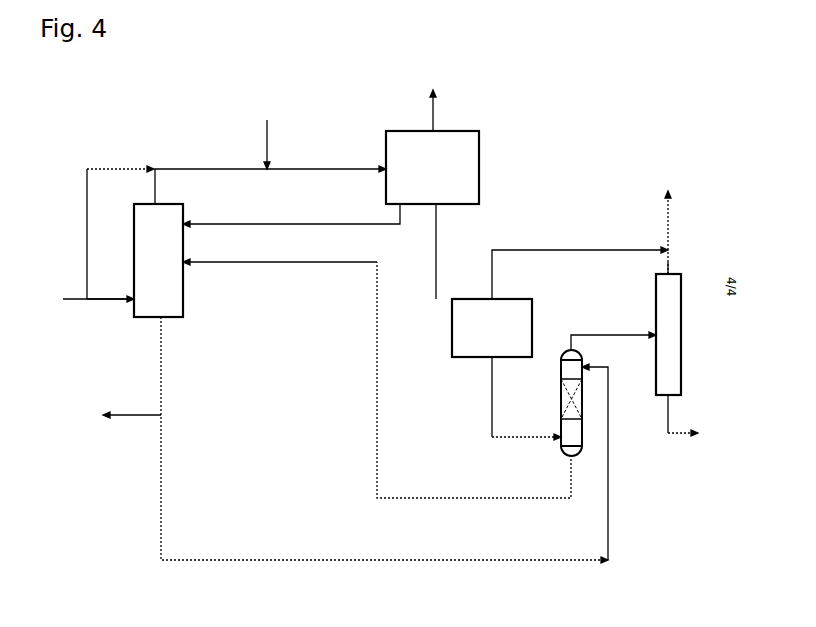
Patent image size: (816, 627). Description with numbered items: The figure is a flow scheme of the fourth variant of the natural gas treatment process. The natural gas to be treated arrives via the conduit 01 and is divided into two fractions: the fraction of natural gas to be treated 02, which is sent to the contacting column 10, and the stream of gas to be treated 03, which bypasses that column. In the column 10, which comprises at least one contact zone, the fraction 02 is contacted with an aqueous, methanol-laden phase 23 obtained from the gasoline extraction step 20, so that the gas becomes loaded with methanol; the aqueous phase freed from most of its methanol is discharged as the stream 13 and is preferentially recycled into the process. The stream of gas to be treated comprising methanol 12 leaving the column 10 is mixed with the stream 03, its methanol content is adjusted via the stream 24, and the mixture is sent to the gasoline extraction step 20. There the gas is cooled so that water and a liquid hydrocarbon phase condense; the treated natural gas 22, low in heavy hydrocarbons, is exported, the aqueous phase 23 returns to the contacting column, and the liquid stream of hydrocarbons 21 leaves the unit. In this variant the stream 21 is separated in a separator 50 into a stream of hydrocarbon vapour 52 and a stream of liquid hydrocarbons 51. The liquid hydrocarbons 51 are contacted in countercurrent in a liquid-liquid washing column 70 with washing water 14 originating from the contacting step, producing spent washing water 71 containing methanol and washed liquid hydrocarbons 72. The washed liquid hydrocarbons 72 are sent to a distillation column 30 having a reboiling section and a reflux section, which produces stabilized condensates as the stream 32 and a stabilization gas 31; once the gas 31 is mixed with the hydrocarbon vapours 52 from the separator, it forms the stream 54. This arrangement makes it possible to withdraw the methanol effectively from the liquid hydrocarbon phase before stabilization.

The conduit 01 is at (76, 297).
The fraction of natural gas to be treated 02 is at (122, 298).
The stream of gas to be treated 03 is at (90, 167).
The column 10 is at (132, 238).
The stream of gas to be treated comprising methanol 12 is at (155, 196).
The stream 13 is at (141, 418).
The washing water 14 is at (161, 370).
The gasoline extraction step 20 is at (480, 142).
The liquid stream of hydrocarbons 21 is at (436, 228).
The natural gas to be treated 22 is at (432, 111).
The aqueous, methanol-laden phase 23 is at (328, 222).
The stream 24 is at (263, 139).
The distillation column 30 is at (682, 343).
The stabilization gas 31 is at (666, 271).
The stabilized condensates 32 is at (678, 435).
The separator 50 is at (462, 358).
The stream of liquid hydrocarbons 51 is at (511, 433).
The stream of hydrocarbon vapour 52 is at (535, 250).
The stream 54 is at (670, 213).
The liquid-liquid washing column 70 is at (563, 452).
The spent washing water 71 is at (259, 266).
The washed liquid hydrocarbons 72 is at (600, 334).